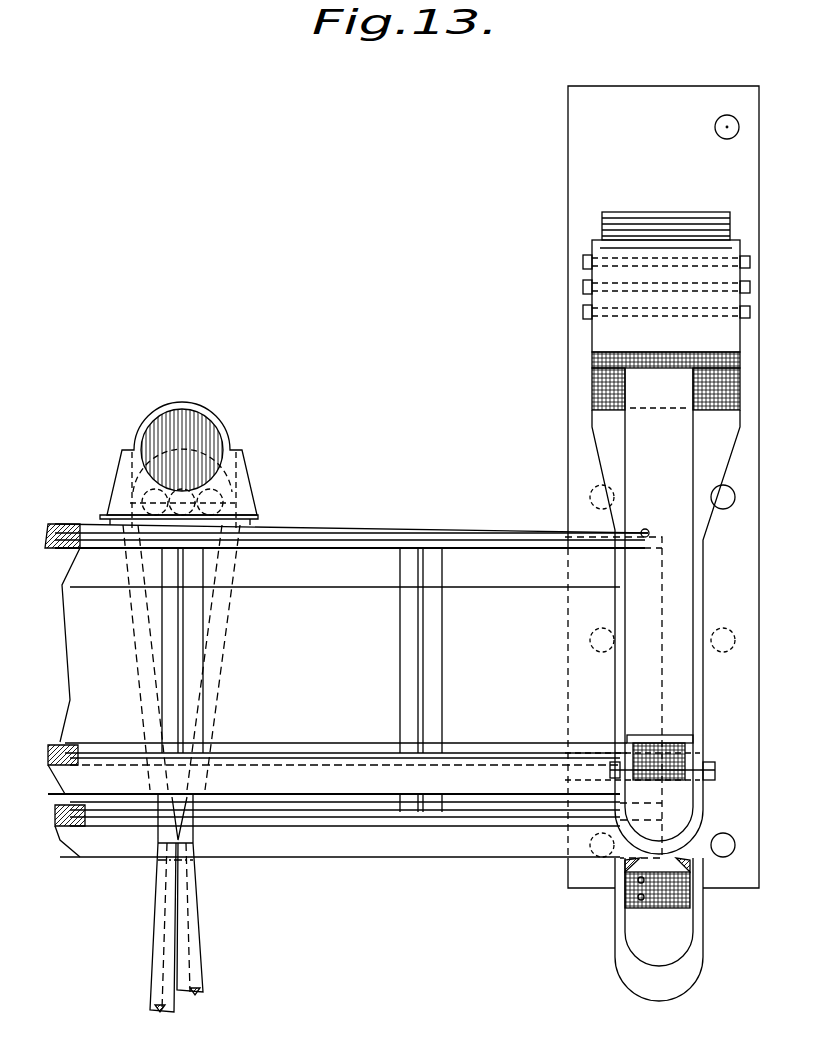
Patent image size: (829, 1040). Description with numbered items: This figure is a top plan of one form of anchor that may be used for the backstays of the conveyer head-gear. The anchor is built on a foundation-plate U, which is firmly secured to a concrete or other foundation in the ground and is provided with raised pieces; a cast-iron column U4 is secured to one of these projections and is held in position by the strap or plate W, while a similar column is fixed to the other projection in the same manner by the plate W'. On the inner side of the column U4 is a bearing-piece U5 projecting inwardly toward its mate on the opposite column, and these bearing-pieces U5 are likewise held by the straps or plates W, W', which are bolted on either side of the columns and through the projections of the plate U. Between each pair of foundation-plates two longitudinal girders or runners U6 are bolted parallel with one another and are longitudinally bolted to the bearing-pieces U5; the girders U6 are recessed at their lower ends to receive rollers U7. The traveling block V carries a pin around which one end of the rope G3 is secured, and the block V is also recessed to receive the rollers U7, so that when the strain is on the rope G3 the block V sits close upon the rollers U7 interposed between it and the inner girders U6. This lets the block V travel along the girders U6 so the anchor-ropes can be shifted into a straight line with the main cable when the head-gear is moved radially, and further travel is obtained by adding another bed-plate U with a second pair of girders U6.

The foundation-plate U is at (546, 885).
The cast-iron column U4 is at (663, 385).
The bearing-piece U5 is at (646, 745).
The longitudinal girder U6 is at (367, 560).
The roller U7 is at (240, 560).
The traveling block V is at (245, 474).
The strap or plate W is at (633, 611).
The strap or plate W' is at (666, 929).
The rope G3 is at (160, 936).